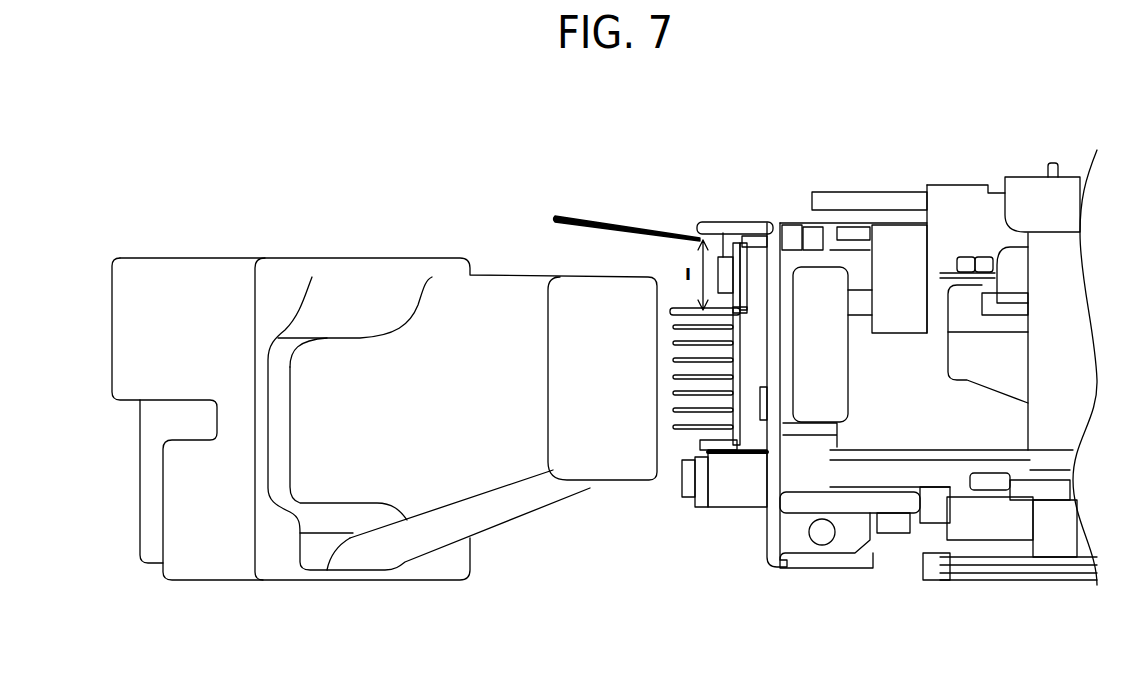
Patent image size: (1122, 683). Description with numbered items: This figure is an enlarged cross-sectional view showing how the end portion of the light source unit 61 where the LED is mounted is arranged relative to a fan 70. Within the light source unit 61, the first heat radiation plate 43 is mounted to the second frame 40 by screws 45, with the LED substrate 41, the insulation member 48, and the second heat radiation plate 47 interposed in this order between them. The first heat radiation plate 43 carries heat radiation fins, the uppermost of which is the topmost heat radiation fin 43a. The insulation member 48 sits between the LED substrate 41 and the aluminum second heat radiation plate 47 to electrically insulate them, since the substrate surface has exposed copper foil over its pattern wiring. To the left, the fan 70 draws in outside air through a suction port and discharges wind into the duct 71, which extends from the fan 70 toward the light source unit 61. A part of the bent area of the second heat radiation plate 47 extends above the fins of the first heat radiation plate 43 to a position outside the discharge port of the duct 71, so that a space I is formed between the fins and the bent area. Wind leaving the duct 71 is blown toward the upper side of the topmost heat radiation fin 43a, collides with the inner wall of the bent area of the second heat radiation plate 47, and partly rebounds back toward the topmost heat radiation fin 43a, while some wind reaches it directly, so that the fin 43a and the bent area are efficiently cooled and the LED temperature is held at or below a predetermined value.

The second frame 40 is at (775, 223).
The LED substrate 41 is at (768, 237).
The first heat radiation plate 43 is at (651, 395).
The topmost heat radiation fin 43a is at (677, 305).
The screws 45 is at (723, 233).
The second heat radiation plate 47 is at (618, 216).
The insulation member 48 is at (763, 383).
The light source unit 61 is at (913, 161).
The fan 70 is at (153, 441).
The duct 71 is at (450, 308).